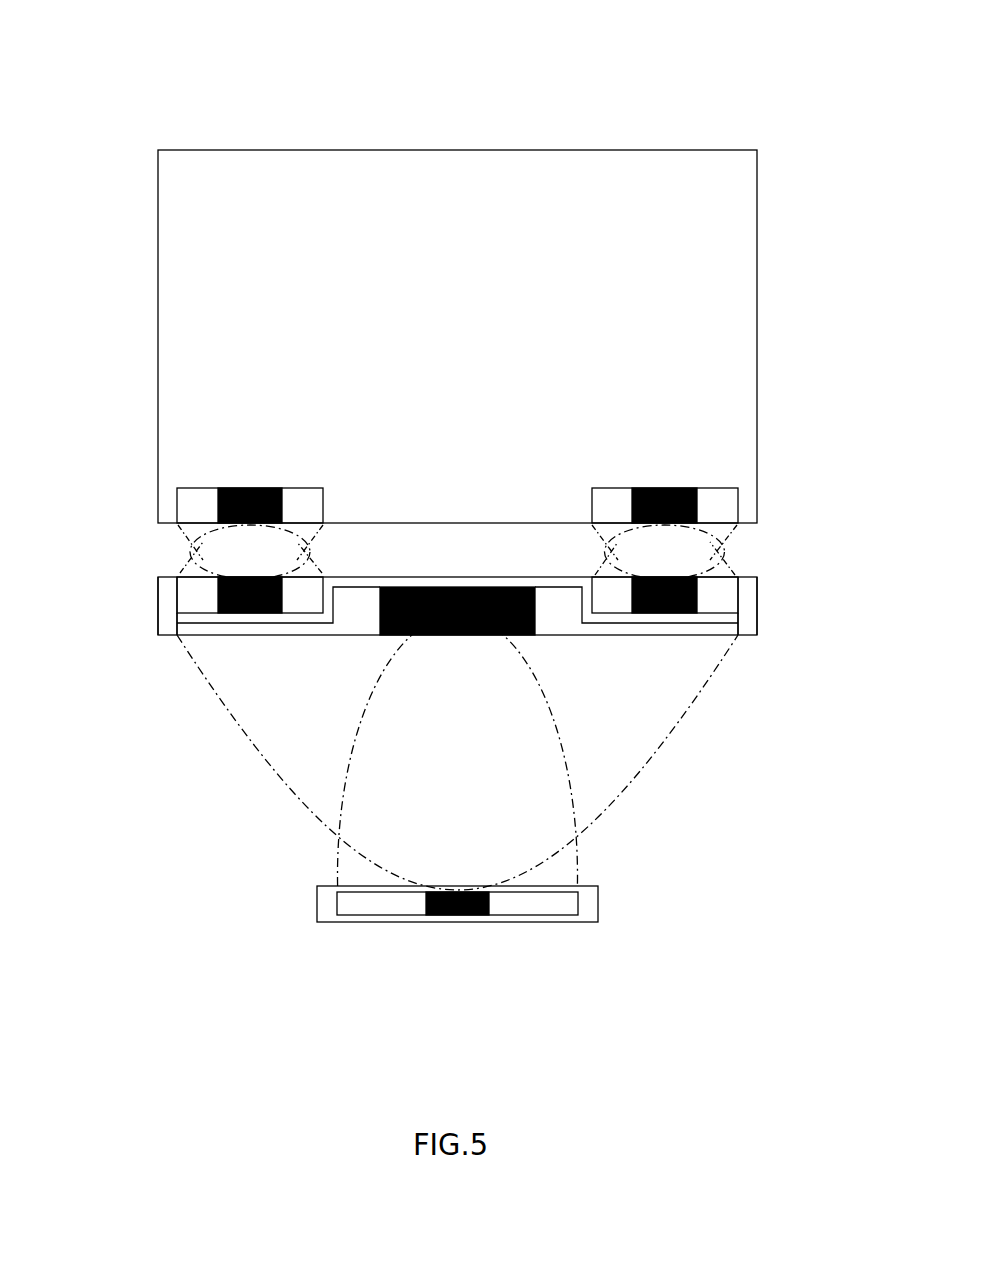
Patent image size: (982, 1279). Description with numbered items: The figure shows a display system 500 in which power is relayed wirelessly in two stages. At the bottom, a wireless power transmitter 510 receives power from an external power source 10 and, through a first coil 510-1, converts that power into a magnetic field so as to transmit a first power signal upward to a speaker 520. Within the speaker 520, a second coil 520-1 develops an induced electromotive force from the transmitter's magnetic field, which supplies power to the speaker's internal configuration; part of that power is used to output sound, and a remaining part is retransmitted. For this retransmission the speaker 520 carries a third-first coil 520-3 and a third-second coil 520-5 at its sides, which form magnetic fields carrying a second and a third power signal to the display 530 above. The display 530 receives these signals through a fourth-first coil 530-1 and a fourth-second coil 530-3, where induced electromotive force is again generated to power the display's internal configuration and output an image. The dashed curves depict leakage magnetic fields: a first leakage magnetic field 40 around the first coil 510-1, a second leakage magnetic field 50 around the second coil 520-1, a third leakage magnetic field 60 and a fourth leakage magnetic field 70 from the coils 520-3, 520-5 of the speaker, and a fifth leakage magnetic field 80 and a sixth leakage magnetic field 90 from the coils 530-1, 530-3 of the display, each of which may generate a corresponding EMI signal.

The display system 500 is at (335, 78).
The display 530 is at (757, 335).
The 4-1 coil 530-1 is at (297, 488).
The 4-2 coil 530-3 is at (606, 488).
The speaker 520 is at (460, 602).
The second coil 520-1 is at (455, 586).
The 3-1 coil 520-3 is at (158, 603).
The 3-2 coil 520-5 is at (757, 610).
The third leakage magnetic field 60 is at (308, 558).
The fourth leakage magnetic field 70 is at (725, 555).
The fifth leakage magnetic field 80 is at (304, 540).
The sixth leakage magnetic field 90 is at (723, 537).
The first leakage magnetic field 40 is at (543, 725).
The second leakage magnetic field 50 is at (640, 775).
The wireless power transmitter 510 is at (498, 950).
The first coil 510-1 is at (377, 915).
The external power source 10 is at (317, 905).